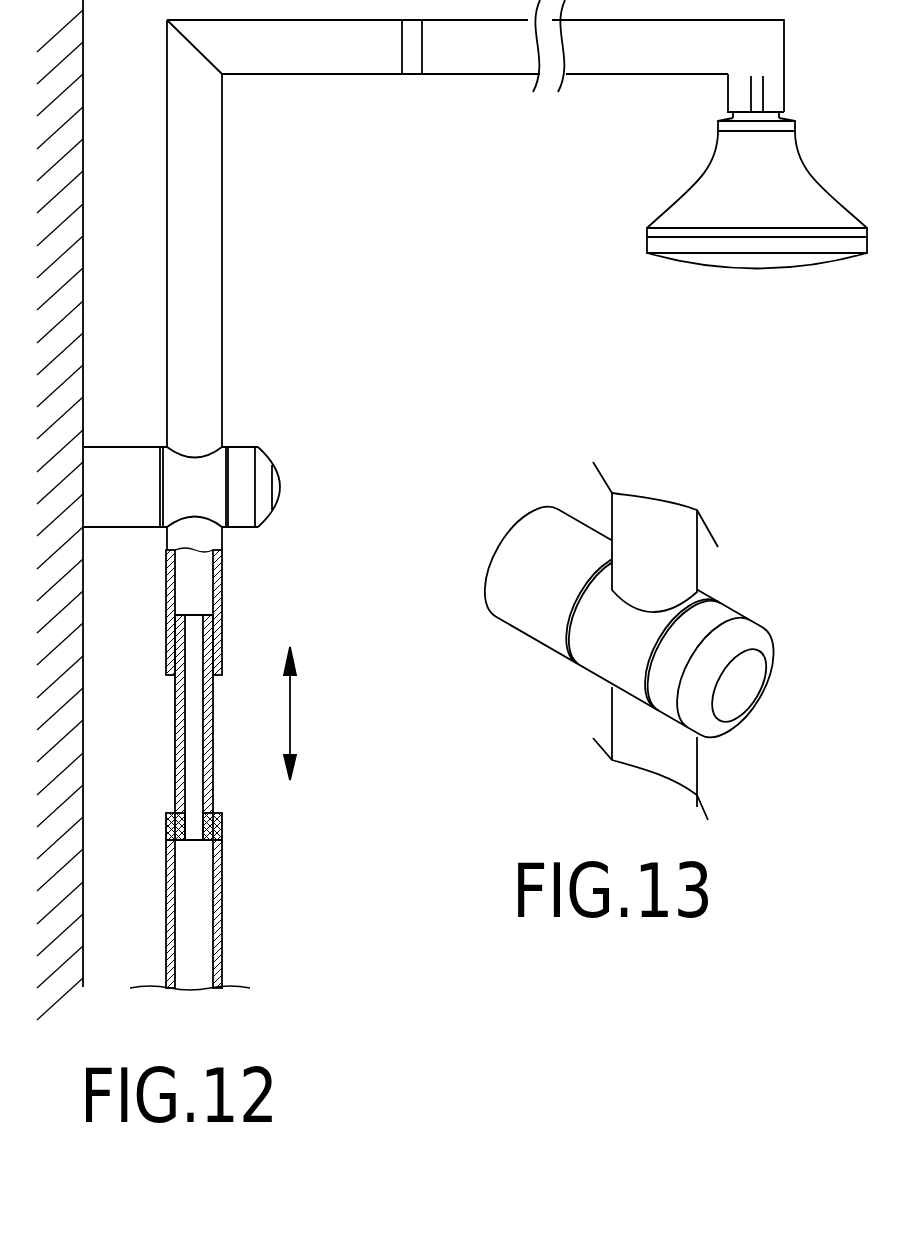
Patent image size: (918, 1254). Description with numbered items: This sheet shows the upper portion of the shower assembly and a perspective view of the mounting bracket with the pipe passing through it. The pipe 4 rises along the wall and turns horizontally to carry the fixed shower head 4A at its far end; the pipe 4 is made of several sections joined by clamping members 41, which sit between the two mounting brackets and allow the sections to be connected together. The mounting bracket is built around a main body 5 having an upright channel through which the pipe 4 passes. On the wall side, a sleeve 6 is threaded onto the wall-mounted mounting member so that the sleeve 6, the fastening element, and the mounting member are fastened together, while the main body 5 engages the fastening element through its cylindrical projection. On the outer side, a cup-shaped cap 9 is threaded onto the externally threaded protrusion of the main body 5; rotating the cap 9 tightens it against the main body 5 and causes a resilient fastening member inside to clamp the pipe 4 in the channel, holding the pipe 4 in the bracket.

In FIG. 12, the pipe 4 is at (235, 265).
In FIG. 13, the pipe 4 is at (687, 765).
In FIG. 12, the fixed shower head 4A is at (728, 302).
In FIG. 12, the clamping member 41 is at (225, 825).
In FIG. 12, the main body 5 is at (218, 500).
In FIG. 13, the main body 5 is at (610, 665).
In FIG. 12, the sleeve 6 is at (143, 468).
In FIG. 13, the sleeve 6 is at (503, 630).
In FIG. 12, the cup-shaped cap 9 is at (292, 484).
In FIG. 13, the cup-shaped cap 9 is at (745, 703).